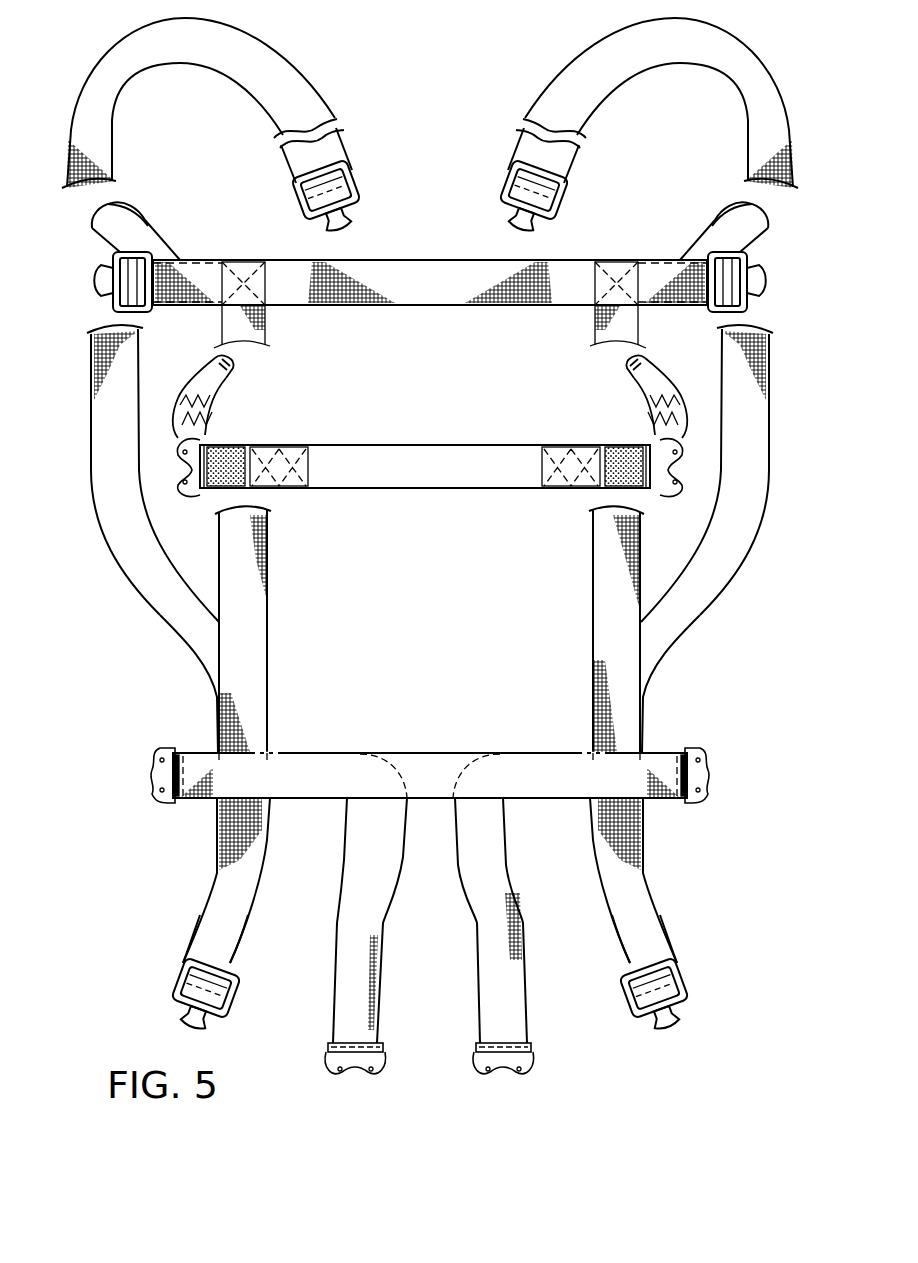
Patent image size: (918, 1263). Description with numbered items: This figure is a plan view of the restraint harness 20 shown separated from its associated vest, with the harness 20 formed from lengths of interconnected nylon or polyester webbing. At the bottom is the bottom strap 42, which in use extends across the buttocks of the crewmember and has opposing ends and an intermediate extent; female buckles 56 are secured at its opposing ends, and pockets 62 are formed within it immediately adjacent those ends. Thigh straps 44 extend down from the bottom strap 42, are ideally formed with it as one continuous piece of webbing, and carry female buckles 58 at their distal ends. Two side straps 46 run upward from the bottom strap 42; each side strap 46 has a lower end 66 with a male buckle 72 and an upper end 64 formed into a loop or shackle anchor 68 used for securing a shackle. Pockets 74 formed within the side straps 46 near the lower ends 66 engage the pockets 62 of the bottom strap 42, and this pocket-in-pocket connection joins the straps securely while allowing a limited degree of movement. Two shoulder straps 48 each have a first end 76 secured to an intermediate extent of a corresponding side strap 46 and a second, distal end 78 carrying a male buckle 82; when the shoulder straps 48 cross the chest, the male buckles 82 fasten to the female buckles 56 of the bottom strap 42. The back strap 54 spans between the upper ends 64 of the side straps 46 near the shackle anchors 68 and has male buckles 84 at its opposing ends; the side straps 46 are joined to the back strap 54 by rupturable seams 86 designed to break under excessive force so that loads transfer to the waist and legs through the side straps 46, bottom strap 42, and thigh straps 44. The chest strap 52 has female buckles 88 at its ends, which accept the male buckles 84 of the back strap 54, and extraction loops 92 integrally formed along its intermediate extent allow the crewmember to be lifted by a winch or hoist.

The restraint harness 20 is at (421, 121).
The bottom strap 42 is at (440, 765).
The thigh straps 44 is at (339, 931).
The side straps 46 is at (270, 654).
The shoulder straps 48 is at (138, 608).
The chest strap 52 is at (433, 476).
The back strap 54 is at (463, 287).
The female buckles 56 is at (151, 752).
The female buckles 58 is at (326, 1060).
The pockets 62 is at (272, 752).
The upper ends 64 is at (448, 202).
The lower ends 66 is at (196, 947).
The shackle anchors 68 is at (120, 220).
The male buckles 72 is at (173, 1000).
The pockets 74 is at (217, 750).
The first end 76 is at (176, 649).
The second end 78 is at (327, 150).
The male buckle 82 is at (350, 218).
The male buckles 84 is at (92, 286).
The rupturable seams 86 is at (263, 288).
The female buckles 88 is at (188, 500).
The extraction loops 92 is at (217, 379).